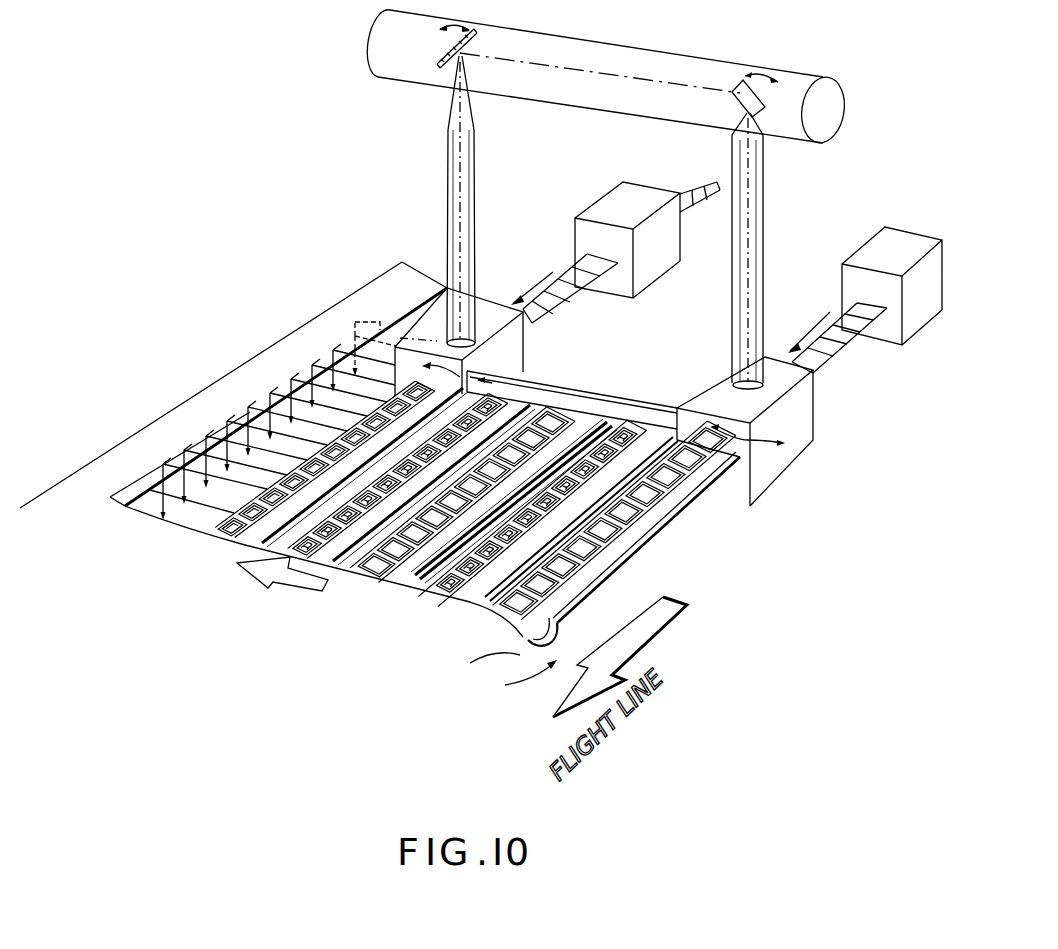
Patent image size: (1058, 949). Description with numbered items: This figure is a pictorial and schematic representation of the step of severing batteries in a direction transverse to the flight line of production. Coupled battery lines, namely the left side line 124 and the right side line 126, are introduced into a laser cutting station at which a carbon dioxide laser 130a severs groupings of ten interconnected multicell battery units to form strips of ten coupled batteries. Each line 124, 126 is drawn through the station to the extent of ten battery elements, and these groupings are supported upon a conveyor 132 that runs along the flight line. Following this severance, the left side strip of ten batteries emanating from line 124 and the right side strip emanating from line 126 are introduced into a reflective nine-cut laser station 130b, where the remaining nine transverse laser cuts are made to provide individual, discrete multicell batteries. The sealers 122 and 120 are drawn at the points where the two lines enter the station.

The carbon dioxide laser 130a is at (672, 52).
The reflective nine-cut laser station 130b is at (260, 370).
The sealer 122 is at (610, 207).
The left side line 124 is at (573, 270).
The sealer 120 is at (883, 238).
The right side line 126 is at (827, 350).
The conveyor 132 is at (492, 675).